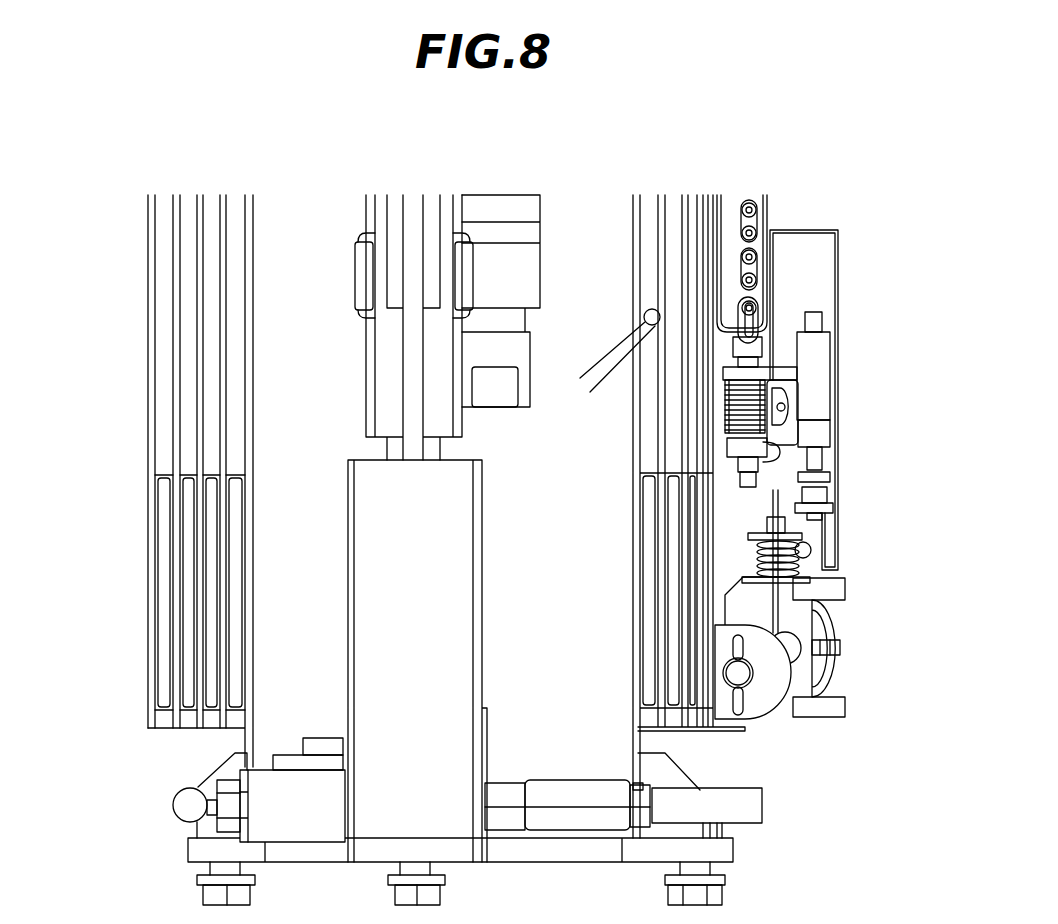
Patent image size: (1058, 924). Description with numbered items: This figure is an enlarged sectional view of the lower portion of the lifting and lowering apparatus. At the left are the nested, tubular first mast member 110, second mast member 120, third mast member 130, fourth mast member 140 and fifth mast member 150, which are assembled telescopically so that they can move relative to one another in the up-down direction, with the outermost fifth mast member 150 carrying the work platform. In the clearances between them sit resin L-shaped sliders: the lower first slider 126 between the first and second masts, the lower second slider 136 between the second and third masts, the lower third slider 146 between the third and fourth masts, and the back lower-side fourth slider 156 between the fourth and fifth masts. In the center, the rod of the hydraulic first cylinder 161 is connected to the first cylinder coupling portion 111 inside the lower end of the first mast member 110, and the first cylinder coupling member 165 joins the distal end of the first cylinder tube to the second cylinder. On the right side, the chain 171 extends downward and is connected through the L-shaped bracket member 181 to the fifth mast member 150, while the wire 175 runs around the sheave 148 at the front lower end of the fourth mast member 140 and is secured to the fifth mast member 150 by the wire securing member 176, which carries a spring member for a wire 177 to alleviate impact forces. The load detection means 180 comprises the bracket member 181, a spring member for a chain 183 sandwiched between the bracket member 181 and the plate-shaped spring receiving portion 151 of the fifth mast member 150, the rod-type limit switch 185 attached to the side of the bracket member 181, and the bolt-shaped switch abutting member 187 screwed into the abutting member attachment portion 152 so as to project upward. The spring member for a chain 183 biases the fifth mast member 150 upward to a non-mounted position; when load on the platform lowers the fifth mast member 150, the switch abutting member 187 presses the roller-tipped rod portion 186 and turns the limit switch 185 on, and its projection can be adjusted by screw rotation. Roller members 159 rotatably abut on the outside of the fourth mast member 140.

The first mast member 110 is at (245, 428).
The second mast member 120 is at (220, 386).
The third mast member 130 is at (197, 346).
The fourth mast member 140 is at (173, 299).
The fifth mast member 150 is at (150, 257).
The lower first slider 126 is at (233, 630).
The lower second slider 136 is at (210, 590).
The lower third slider 146 is at (186, 545).
The back lower-side fourth slider 156 is at (163, 500).
The first cylinder 161 is at (387, 361).
The first cylinder coupling member 165 is at (518, 275).
The first cylinder coupling portion 111 is at (460, 503).
The wire 175 is at (700, 238).
The chain 171 is at (768, 213).
The spring receiving portion 151 is at (723, 371).
The load detection means 180 is at (852, 334).
The limit switch 185 is at (817, 395).
The rod portion 186 is at (825, 455).
The switch abutting member 187 is at (817, 487).
The abutting member attachment portion 152 is at (832, 508).
The spring member for a chain 183 is at (723, 413).
The bracket member 181 is at (723, 437).
The wire securing member 176 is at (787, 523).
The spring member for a wire 177 is at (805, 565).
The roller member 159 is at (827, 672).
The sheave 148 is at (700, 700).